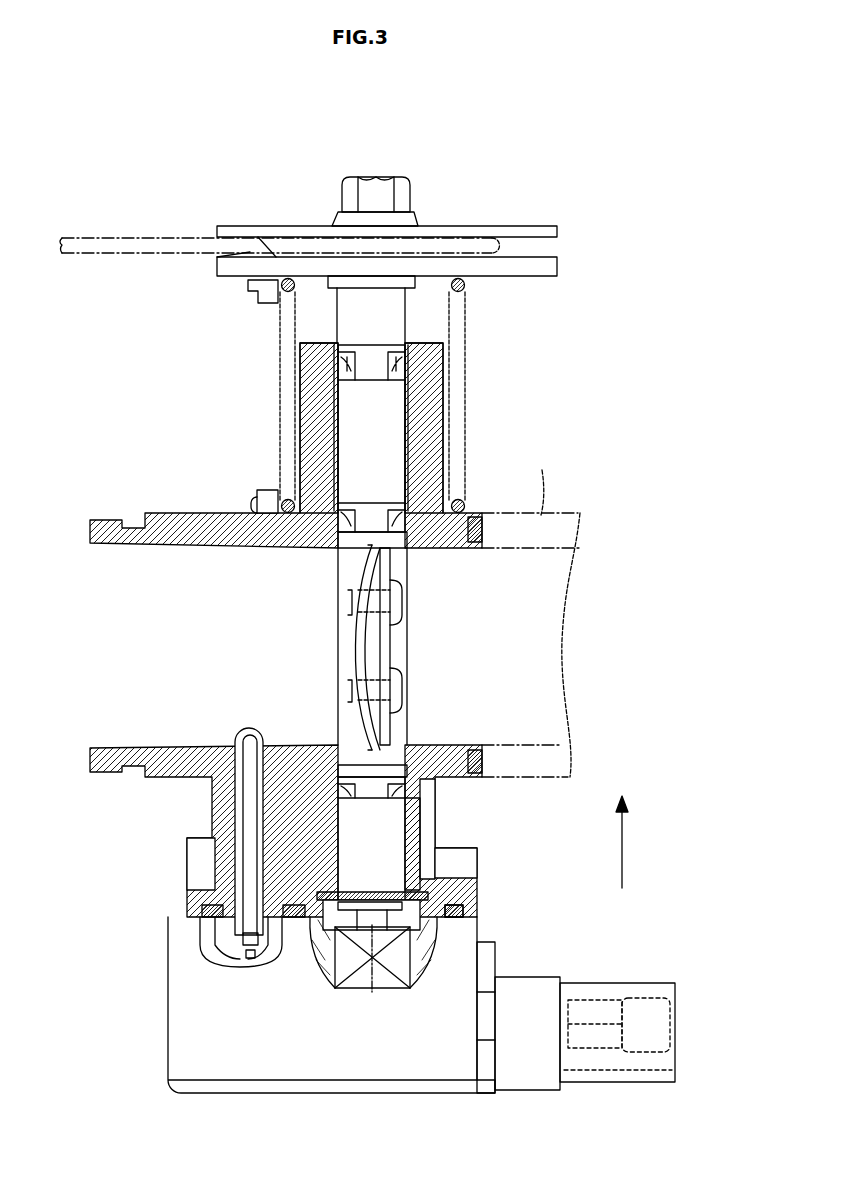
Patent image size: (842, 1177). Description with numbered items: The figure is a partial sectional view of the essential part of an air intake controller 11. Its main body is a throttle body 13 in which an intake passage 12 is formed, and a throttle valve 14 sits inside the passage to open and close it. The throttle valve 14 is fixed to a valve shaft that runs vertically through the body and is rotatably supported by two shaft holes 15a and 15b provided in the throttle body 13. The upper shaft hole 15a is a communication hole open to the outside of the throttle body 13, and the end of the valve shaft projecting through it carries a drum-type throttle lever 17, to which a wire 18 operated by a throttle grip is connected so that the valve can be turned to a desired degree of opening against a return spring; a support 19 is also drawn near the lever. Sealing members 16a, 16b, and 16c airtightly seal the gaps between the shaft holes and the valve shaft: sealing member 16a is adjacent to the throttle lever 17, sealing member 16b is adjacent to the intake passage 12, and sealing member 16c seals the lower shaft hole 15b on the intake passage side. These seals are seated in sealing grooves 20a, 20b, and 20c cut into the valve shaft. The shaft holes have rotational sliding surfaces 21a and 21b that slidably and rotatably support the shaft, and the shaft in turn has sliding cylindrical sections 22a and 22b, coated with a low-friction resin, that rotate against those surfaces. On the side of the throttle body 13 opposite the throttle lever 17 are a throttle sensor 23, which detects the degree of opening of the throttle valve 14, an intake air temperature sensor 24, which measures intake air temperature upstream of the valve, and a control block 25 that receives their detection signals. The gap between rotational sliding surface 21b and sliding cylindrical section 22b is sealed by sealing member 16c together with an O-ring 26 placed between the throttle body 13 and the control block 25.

The air intake controller 11 is at (514, 133).
The intake passage 12 is at (135, 600).
The throttle body 13 is at (150, 505).
The throttle valve 14 is at (355, 642).
The shaft hole 15a is at (405, 452).
The shaft hole 15b is at (410, 865).
The sealing member 16a is at (370, 352).
The sealing member 16b is at (400, 515).
The sealing member 16c is at (365, 772).
The throttle lever 17 is at (546, 226).
The wire 18 is at (148, 236).
The support strut 19 is at (467, 326).
The sealing groove 20a is at (380, 357).
The sealing groove 20b is at (375, 520).
The sealing groove 20c is at (385, 779).
The rotational sliding surface 21a is at (345, 440).
The rotational sliding surface 21b is at (350, 860).
The sliding cylindrical section 22a is at (415, 405).
The sliding cylindrical section 22b is at (415, 832).
The throttle sensor 23 is at (372, 984).
The intake air temperature sensor 24 is at (245, 727).
The control block 25 is at (290, 1052).
The O-ring 26 is at (455, 922).